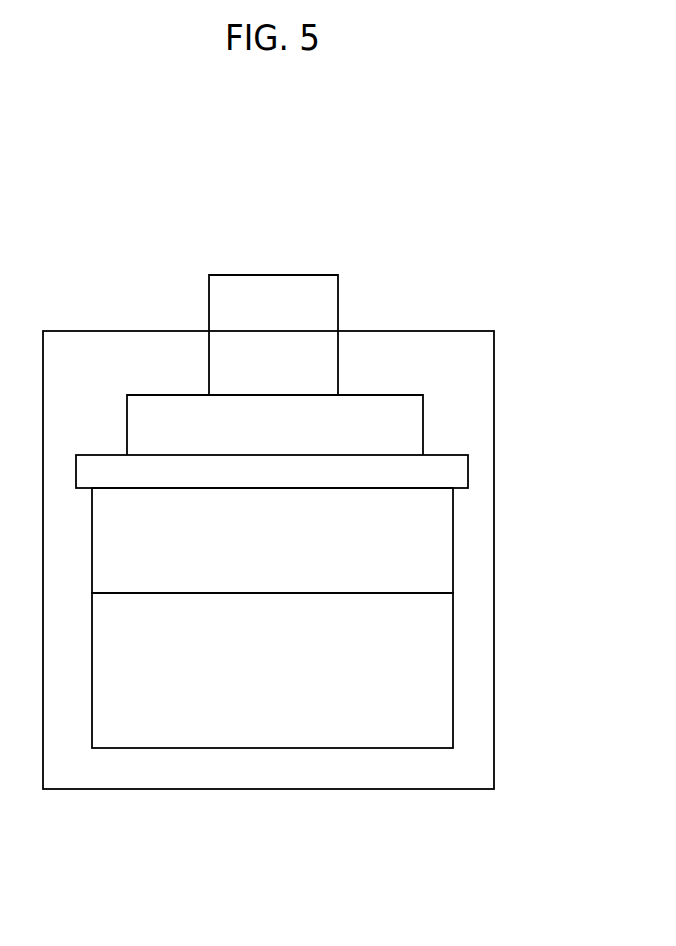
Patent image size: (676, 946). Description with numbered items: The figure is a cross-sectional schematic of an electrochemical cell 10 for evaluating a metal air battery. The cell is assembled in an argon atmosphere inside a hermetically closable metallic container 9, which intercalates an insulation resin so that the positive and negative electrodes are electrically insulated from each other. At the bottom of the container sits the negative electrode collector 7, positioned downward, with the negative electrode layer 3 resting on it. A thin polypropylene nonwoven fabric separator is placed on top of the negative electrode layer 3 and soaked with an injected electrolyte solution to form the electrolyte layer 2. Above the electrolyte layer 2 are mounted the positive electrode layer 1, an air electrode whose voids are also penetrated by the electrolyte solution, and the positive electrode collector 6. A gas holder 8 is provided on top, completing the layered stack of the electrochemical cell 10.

The electrochemical cell 10 is at (514, 184).
The hermetic container 9 is at (438, 773).
The gas holder 8 is at (323, 306).
The positive electrode layer 1 is at (417, 423).
The positive electrode collector 6 is at (158, 393).
The electrolyte layer 2 is at (432, 473).
The negative electrode layer 3 is at (430, 537).
The negative electrode collector 7 is at (438, 672).